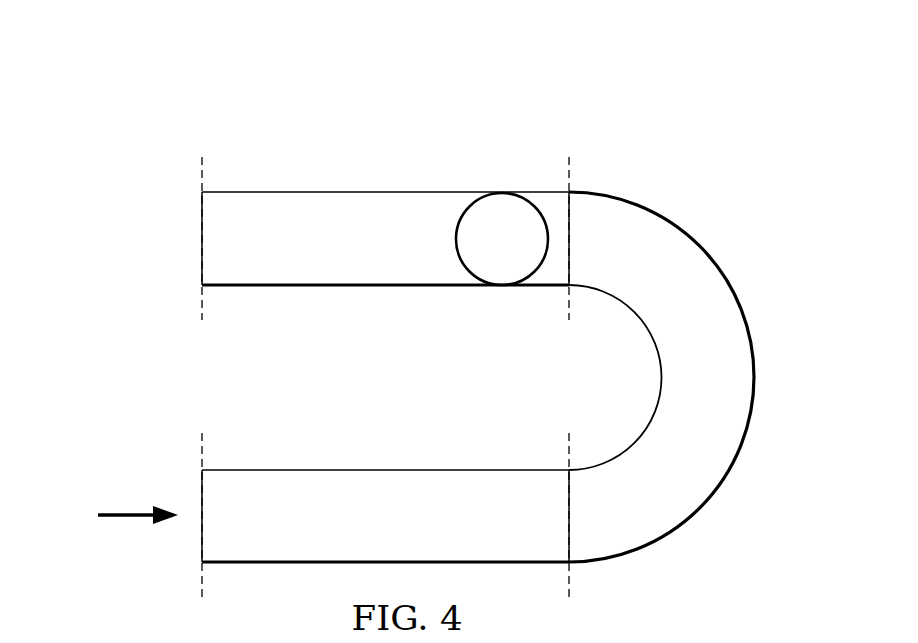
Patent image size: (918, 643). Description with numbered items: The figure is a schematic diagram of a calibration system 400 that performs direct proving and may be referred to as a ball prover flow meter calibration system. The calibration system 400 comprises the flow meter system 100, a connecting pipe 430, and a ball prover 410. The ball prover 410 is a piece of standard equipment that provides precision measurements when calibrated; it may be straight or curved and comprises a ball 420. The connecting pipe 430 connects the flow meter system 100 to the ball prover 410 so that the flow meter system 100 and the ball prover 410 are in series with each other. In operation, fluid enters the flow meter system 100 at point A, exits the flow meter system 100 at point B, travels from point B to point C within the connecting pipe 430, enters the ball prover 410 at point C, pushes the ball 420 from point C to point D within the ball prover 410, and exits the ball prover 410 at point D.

The calibration system 400 is at (184, 85).
The ball prover 410 is at (350, 198).
The ball 420 is at (478, 253).
The connecting pipe 430 is at (698, 257).
The flow meter system 100 is at (350, 481).